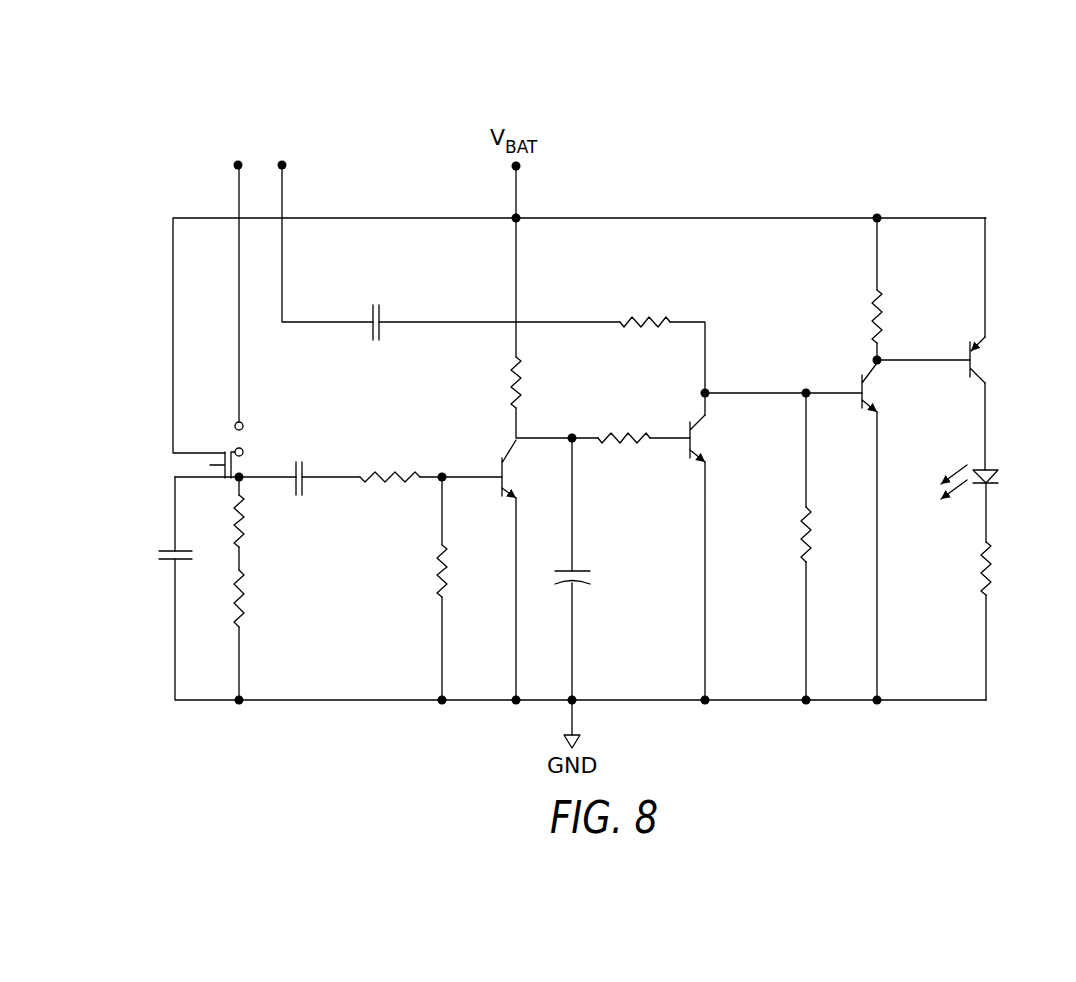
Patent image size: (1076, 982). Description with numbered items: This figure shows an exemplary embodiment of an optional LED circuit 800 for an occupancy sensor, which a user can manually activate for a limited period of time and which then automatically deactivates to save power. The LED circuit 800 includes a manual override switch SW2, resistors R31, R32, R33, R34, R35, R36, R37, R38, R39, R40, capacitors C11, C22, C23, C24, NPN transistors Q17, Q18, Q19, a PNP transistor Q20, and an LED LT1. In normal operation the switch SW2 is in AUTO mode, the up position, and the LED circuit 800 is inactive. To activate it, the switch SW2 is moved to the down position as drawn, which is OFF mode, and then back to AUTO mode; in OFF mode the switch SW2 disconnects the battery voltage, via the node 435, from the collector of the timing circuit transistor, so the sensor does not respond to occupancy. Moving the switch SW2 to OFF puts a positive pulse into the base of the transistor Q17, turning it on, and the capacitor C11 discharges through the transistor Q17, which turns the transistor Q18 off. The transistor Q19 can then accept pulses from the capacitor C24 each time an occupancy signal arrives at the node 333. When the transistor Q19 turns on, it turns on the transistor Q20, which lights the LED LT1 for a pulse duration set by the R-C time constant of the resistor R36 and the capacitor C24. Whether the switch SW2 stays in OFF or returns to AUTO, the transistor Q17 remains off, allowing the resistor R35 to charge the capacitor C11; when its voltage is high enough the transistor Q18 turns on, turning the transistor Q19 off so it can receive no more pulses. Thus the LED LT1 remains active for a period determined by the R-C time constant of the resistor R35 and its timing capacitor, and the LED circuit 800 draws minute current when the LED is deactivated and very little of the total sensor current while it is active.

The LED circuit 800 is at (882, 129).
The node 435 is at (232, 164).
The node 333 is at (288, 164).
The manual override switch SW2 is at (250, 438).
The capacitor C22 is at (157, 555).
The capacitor C23 is at (296, 497).
The capacitor C24 is at (373, 303).
The capacitor C11 is at (622, 570).
The resistor R31 is at (247, 520).
The resistor R32 is at (247, 598).
The resistor R33 is at (375, 470).
The resistor R34 is at (440, 577).
The resistor R35 is at (512, 372).
The resistor R36 is at (653, 317).
The resistor R37 is at (618, 433).
The resistor R38 is at (802, 542).
The resistor R39 is at (877, 305).
The resistor R40 is at (988, 567).
The NPN transistor Q17 is at (498, 467).
The NPN transistor Q18 is at (707, 437).
The NPN transistor Q19 is at (873, 390).
The PNP transistor Q20 is at (984, 355).
The LED LT1 is at (994, 477).